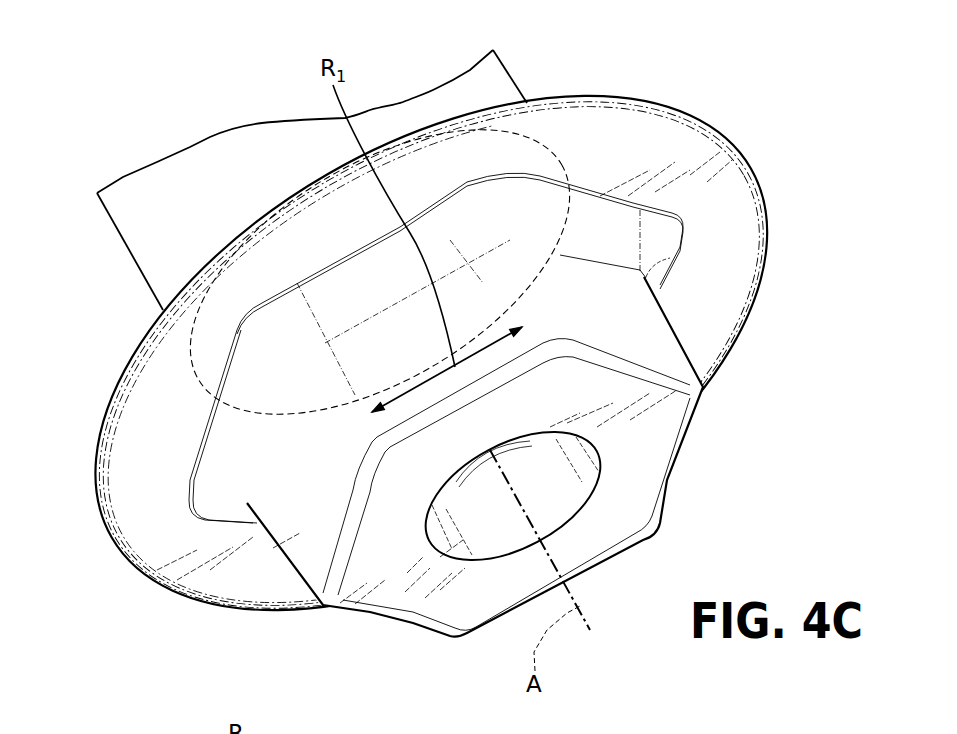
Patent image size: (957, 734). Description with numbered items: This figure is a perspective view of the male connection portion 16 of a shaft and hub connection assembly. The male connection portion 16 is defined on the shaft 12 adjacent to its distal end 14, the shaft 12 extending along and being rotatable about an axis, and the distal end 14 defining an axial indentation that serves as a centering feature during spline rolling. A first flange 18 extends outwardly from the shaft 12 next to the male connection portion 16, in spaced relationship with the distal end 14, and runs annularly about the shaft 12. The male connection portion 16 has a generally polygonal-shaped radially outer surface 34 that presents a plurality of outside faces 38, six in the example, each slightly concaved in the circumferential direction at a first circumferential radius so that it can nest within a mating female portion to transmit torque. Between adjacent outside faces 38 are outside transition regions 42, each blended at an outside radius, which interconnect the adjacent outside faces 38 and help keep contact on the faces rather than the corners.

The shaft 12 is at (282, 183).
The distal end 14 is at (506, 544).
The male connection portion 16 is at (431, 358).
The first flange 18 is at (431, 356).
The radially outer surface 34 is at (500, 404).
The outside faces 38 is at (300, 440).
The outside transition regions 42 is at (381, 492).